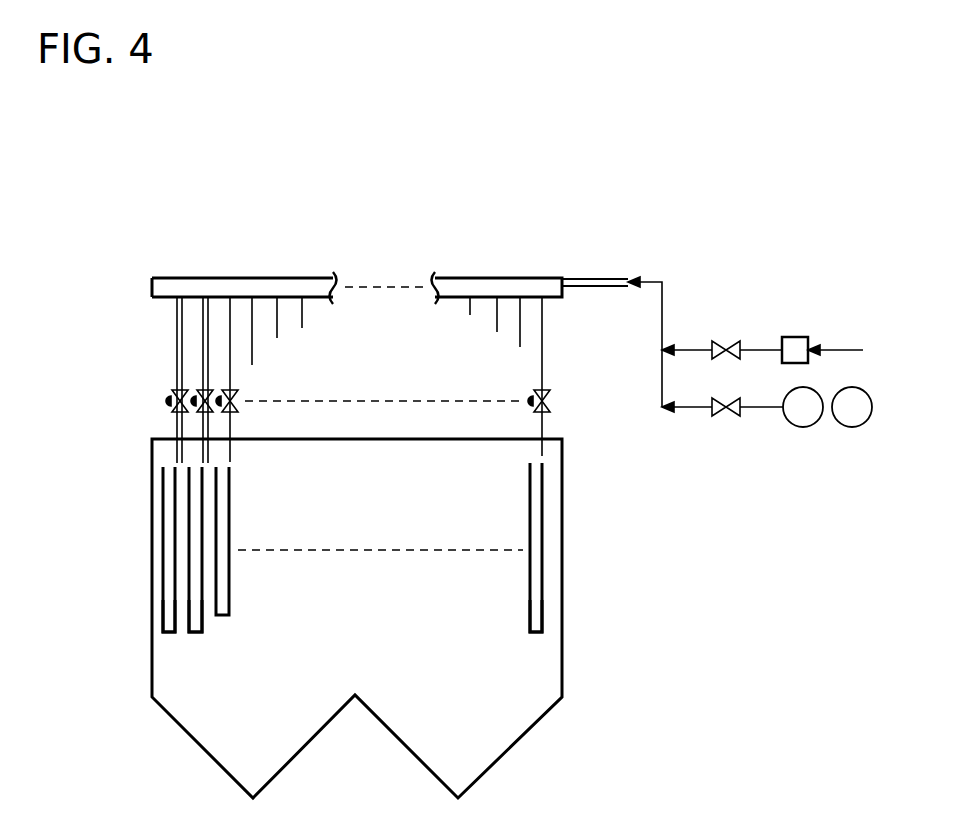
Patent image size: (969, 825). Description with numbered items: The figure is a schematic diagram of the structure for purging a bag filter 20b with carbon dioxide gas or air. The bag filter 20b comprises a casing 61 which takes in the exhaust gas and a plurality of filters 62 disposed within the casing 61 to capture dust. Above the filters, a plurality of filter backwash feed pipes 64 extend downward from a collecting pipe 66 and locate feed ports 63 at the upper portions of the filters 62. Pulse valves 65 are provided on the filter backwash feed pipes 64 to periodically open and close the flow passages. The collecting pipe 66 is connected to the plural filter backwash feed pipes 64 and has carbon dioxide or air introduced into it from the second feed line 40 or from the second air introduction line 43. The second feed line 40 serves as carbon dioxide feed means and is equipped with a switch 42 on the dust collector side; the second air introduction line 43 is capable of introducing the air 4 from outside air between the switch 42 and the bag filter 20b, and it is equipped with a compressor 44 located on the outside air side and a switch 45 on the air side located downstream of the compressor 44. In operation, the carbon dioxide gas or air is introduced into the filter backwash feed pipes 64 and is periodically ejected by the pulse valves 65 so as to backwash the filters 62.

The bag filter 20b is at (361, 225).
The collecting pipe 66 is at (222, 292).
The filter backwash feed pipes 64 is at (232, 332).
The pulse valves 65 is at (200, 416).
The feed ports 63 is at (190, 478).
The filters 62 is at (198, 636).
The casing 61 is at (150, 612).
The switch 45 is at (712, 347).
The second air introduction line 43 is at (762, 350).
The compressor 44 is at (803, 338).
The air 4 is at (845, 350).
The switch 42 is at (715, 415).
The second feed line 40 is at (760, 410).